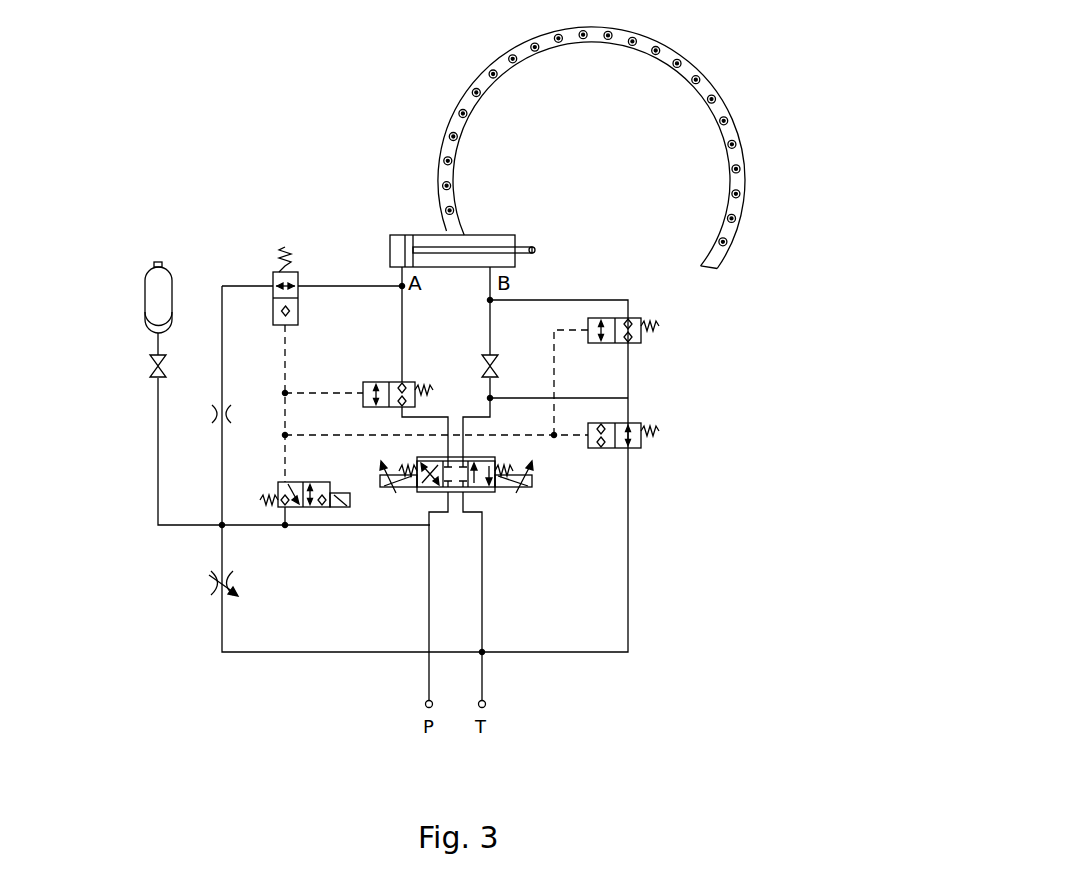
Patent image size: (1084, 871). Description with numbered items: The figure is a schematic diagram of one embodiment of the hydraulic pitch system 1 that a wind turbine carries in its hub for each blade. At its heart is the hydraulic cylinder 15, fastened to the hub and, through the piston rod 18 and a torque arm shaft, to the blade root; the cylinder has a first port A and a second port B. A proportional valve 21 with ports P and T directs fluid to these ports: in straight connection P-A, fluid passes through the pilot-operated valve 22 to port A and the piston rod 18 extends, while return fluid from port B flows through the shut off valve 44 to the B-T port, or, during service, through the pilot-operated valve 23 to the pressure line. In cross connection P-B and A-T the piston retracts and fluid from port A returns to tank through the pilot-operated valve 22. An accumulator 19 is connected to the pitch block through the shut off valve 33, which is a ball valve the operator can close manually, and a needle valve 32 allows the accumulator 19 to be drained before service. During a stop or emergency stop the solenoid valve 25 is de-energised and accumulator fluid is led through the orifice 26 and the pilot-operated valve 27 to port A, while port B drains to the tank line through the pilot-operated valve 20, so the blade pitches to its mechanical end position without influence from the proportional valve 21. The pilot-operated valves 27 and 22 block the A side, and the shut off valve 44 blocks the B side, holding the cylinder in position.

The hydraulic pitch system 1 is at (749, 247).
The hydraulic cylinder 15 is at (398, 238).
The piston rod 18 is at (529, 246).
The accumulator 19 is at (143, 283).
The pilot-operated valve 20 is at (644, 446).
The proportional valve 21 is at (535, 482).
The pilot-operated valve 22 is at (385, 382).
The pilot-operated valve 23 is at (644, 341).
The solenoid valve 25 is at (277, 482).
The orifice 26 is at (212, 414).
The pilot-operated valve 27 is at (274, 278).
The needle valve 32 is at (216, 584).
The shut off valve 33 is at (153, 363).
The shut off valve 44 is at (495, 362).